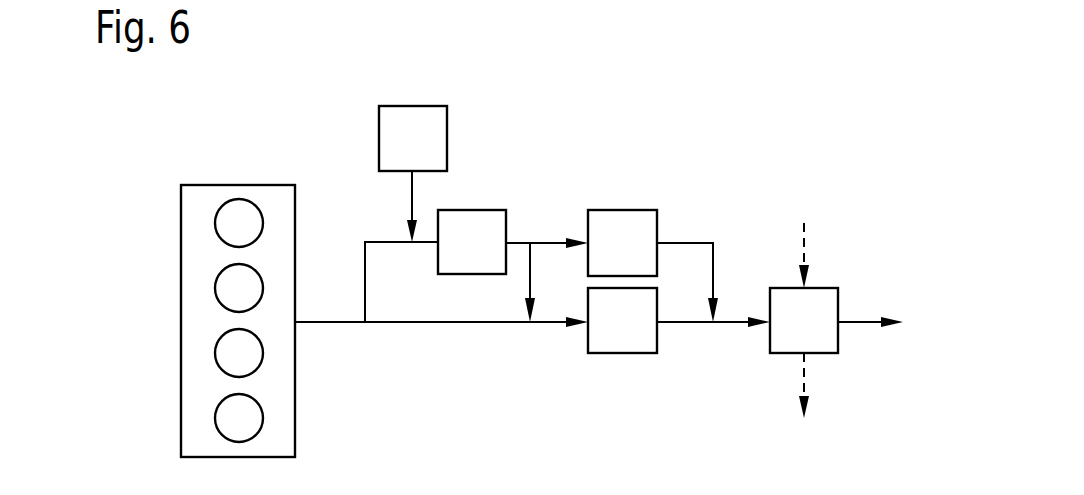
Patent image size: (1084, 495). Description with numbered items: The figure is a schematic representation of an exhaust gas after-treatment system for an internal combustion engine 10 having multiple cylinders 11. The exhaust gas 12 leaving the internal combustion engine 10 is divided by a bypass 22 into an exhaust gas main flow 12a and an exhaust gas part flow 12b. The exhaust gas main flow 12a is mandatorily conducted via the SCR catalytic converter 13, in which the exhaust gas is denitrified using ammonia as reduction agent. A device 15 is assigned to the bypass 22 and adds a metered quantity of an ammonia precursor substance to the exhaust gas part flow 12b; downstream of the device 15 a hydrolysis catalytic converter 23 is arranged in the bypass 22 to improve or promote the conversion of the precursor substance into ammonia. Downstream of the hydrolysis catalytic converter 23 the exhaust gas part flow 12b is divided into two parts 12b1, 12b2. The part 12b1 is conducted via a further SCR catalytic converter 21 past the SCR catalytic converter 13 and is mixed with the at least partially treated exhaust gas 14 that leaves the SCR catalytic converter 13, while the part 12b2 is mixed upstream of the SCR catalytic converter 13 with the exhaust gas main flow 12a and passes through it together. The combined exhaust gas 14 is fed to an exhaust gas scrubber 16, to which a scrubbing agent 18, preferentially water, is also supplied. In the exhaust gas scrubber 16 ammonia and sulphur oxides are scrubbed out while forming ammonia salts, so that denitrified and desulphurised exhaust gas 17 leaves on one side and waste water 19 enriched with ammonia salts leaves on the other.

The internal combustion engine 10 is at (277, 166).
The cylinders 11 is at (227, 232).
The exhaust gas 12 is at (332, 318).
The exhaust gas main flow 12a is at (438, 324).
The exhaust gas part flow 12b is at (382, 241).
The part of the exhaust gas part flow 12b1 is at (547, 240).
The part of the exhaust gas part flow 12b2 is at (532, 277).
The SCR catalytic converter 13 is at (622, 354).
The at least partially treated exhaust gas 14 is at (688, 324).
The device 15 is at (437, 138).
The exhaust gas scrubber 16 is at (820, 297).
The desulphurised exhaust gas 17 is at (860, 324).
The scrubbing agent 18 is at (800, 240).
The waste water 19 is at (800, 382).
The further SCR catalytic converter 21 is at (622, 222).
The bypass 22 is at (690, 241).
The hydrolysis catalytic converter 23 is at (478, 222).